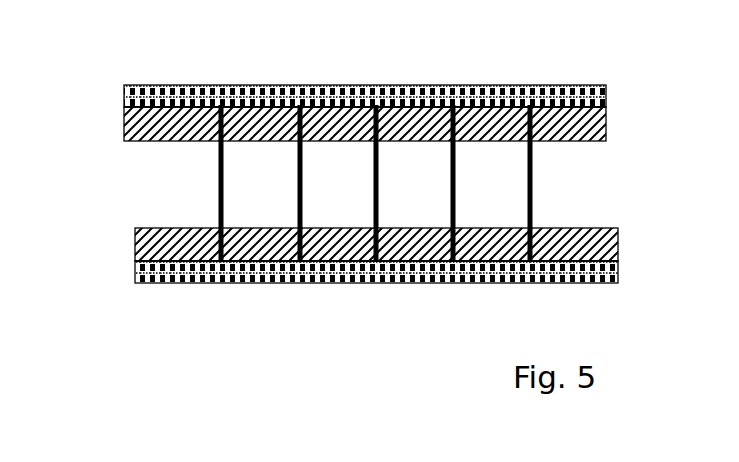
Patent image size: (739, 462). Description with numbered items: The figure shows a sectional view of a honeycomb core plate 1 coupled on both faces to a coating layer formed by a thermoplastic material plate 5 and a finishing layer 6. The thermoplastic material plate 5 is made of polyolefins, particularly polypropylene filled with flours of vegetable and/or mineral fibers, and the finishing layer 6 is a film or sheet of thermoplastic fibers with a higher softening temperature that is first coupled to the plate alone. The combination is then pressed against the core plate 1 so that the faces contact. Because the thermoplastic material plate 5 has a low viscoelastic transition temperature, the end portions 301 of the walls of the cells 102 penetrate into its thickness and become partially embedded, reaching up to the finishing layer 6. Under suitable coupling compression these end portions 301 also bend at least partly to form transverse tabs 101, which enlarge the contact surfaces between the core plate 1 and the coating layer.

The honeycomb core plate 1 is at (373, 175).
The thermoplastic material plate 5 is at (336, 181).
The finishing layer 6 is at (113, 95).
The transverse tabs 101 is at (371, 184).
The walls of the cells 102 is at (408, 136).
The end portions of the cell walls 301 is at (371, 142).